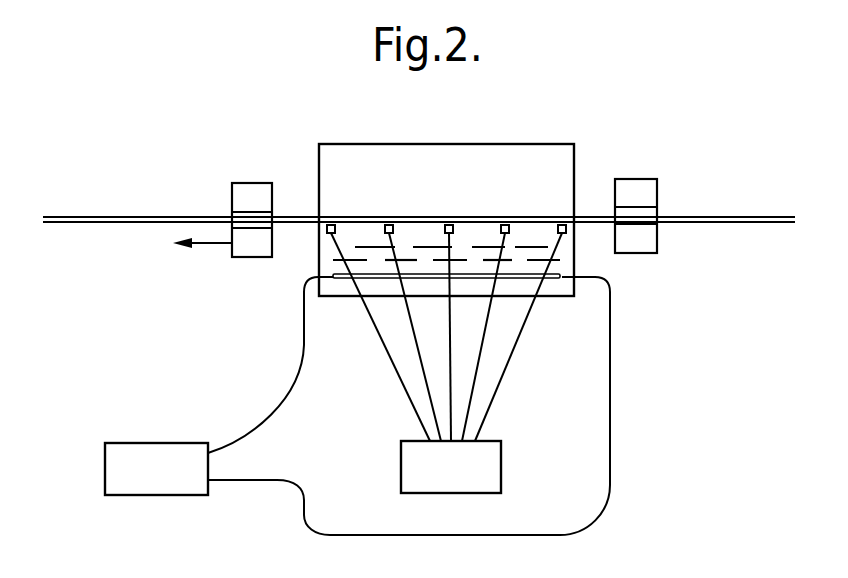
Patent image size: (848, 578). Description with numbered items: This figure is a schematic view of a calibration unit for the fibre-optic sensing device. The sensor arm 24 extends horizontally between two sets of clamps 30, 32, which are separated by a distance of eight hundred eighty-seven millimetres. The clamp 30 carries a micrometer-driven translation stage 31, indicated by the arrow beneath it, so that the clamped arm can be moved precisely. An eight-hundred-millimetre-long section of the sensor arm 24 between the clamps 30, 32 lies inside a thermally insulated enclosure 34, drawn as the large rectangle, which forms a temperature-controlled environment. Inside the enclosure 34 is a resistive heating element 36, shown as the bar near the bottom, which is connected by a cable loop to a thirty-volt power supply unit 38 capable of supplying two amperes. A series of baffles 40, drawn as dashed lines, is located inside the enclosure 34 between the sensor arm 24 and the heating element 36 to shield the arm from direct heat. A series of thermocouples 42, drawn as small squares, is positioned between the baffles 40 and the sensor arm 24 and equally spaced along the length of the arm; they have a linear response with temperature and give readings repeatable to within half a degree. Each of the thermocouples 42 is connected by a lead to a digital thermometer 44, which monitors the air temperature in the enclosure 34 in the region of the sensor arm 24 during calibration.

The sensor arm 24 is at (138, 216).
The clamp 30 is at (249, 183).
The micrometer-driven translation stage 31 is at (247, 258).
The clamp 32 is at (648, 254).
The thermally insulated enclosure 34 is at (446, 144).
The resistive heating element 36 is at (551, 279).
The power supply unit 38 is at (193, 496).
The baffles 40 is at (538, 259).
The thermocouples 42 is at (503, 224).
The digital thermometer 44 is at (502, 483).